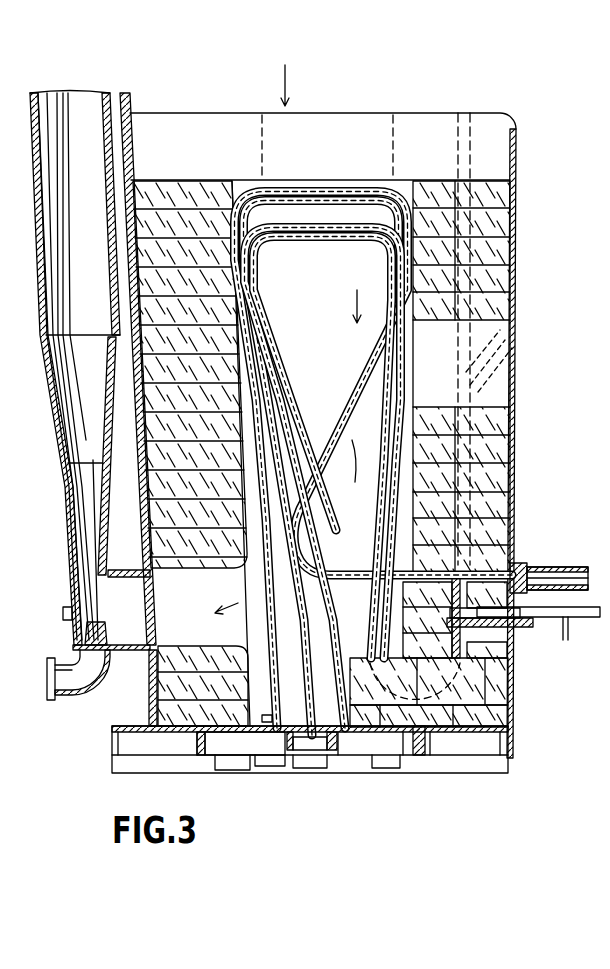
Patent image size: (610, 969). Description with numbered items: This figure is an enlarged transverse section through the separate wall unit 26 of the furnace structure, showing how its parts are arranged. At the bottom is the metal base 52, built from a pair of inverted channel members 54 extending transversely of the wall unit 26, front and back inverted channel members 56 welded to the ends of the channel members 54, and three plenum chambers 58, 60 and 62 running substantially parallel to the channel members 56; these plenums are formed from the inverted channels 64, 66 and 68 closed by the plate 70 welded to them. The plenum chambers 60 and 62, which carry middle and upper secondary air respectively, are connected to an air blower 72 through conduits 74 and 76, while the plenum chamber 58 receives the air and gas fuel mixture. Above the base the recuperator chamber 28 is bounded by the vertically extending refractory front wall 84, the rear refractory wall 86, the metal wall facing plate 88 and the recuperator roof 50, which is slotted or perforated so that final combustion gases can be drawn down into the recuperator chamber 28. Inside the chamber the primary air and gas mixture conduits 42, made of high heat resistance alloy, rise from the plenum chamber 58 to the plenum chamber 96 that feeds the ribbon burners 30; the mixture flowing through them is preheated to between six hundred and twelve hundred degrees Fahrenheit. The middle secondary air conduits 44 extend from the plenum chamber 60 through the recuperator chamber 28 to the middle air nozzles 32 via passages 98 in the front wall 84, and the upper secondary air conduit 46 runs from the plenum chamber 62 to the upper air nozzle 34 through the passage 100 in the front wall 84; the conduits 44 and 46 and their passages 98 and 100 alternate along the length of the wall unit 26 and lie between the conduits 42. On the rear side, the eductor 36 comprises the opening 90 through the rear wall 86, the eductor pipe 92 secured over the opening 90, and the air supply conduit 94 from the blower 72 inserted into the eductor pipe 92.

The separate wall unit 26 is at (535, 173).
The recuperator chamber 28 is at (330, 305).
The primary air and gas mixture ribbon burner 30 is at (572, 566).
The middle secondary air nozzle 32 is at (500, 360).
The upper secondary air nozzle 34 is at (470, 117).
The eductor 36 is at (62, 487).
The primary air and gas mixture conduit 42 is at (362, 370).
The middle secondary air conduit 44 is at (300, 620).
The upper secondary air conduit 46 is at (312, 516).
The recuperator roof 50 is at (362, 113).
The metal base 52 is at (282, 751).
The inverted channel member 54 is at (478, 774).
The front and back inverted channel member 56 is at (130, 735).
The plenum chamber 58 is at (245, 742).
The plenum chamber 60 is at (312, 760).
The plenum chamber 62 is at (370, 742).
The inverted channel 64 is at (245, 727).
The inverted channel 66 is at (322, 730).
The inverted channel 68 is at (415, 755).
The plate 70 is at (268, 766).
The air blower 72 is at (215, 760).
The conduit 74 is at (305, 768).
The conduit 76 is at (385, 768).
The refractory front wall 84 is at (517, 196).
The rear refractory wall 86 is at (258, 360).
The metal wall facing plate 88 is at (150, 694).
The opening 90 is at (172, 567).
The eductor pipe 92 is at (58, 428).
The air supply conduit 94 is at (62, 665).
The plenum chamber 96 is at (518, 562).
The passage 98 is at (466, 456).
The passage 100 is at (478, 282).